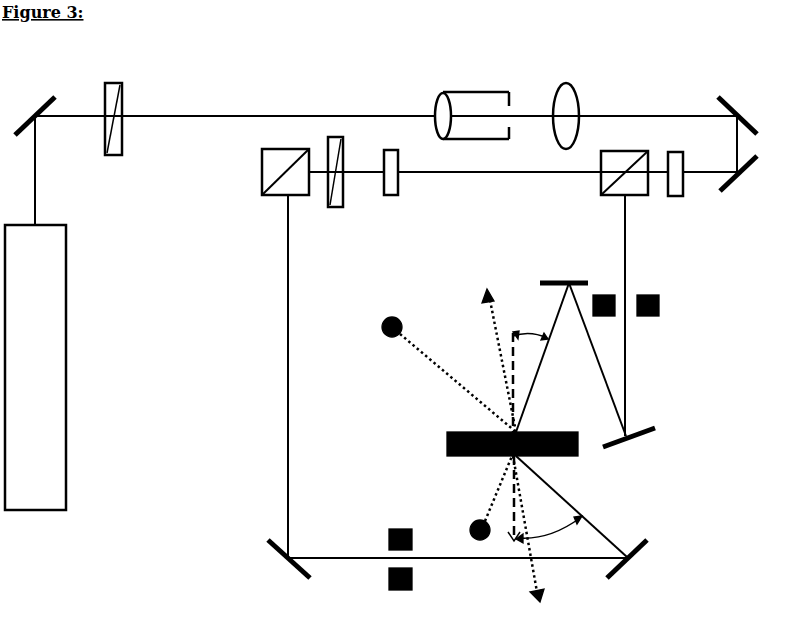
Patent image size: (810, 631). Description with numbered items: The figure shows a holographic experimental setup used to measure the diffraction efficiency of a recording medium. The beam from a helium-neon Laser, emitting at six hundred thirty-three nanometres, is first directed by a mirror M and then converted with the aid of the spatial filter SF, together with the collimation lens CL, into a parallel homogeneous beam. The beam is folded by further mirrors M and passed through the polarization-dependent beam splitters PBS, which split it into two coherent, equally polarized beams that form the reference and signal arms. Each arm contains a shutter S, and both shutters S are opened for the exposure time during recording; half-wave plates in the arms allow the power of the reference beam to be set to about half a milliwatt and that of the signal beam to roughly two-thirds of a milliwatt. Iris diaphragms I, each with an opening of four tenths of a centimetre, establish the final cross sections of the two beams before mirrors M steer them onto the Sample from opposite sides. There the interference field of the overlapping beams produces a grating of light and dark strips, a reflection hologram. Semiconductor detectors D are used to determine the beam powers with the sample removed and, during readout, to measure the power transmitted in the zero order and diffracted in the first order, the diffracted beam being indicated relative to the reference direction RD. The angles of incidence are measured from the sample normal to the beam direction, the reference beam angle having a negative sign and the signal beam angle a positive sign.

The mirror M is at (386, 340).
The shutter S is at (224, 156).
The spatial filter SF is at (472, 105).
The collimation lens CL is at (577, 107).
The polarization-dependent beam splitter PBS is at (430, 187).
The iris diaphragm I is at (531, 442).
The semiconductor detector D is at (434, 428).
The reference direction RD is at (504, 431).
The sample Sample is at (479, 444).
The He-Ne laser Laser is at (35, 367).